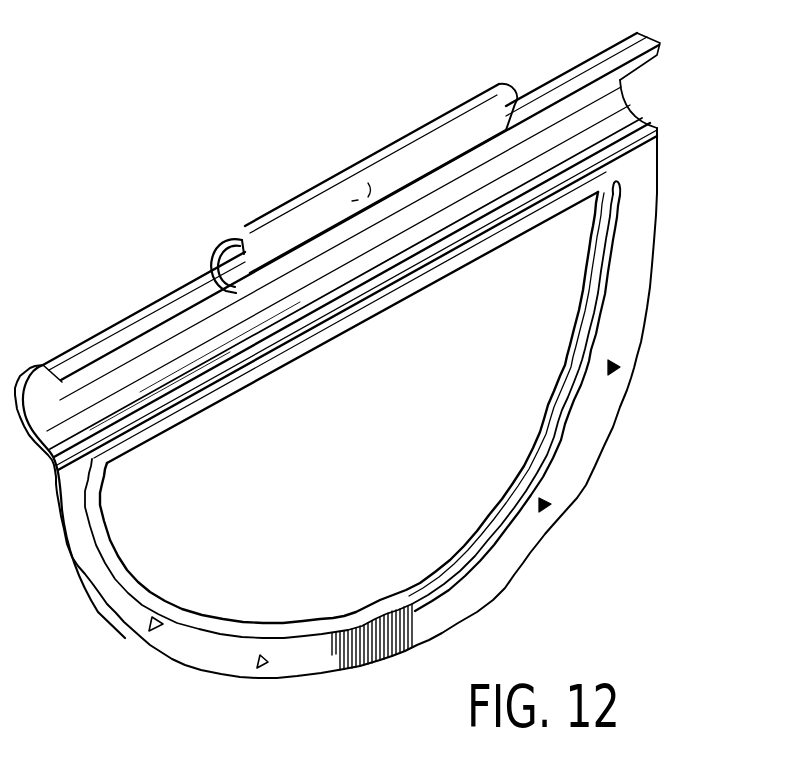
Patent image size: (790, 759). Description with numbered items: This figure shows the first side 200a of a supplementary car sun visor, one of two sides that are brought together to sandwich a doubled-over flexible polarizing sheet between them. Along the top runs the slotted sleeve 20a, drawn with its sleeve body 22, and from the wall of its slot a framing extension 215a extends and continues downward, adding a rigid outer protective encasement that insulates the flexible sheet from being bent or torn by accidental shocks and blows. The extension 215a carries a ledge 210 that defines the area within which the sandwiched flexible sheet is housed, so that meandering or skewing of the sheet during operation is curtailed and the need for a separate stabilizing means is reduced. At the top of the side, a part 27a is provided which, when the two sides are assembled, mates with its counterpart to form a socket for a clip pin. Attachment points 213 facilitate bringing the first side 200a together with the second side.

The first side 200a is at (238, 166).
The slotted sleeve 20a is at (110, 335).
The slotted sleeve body 22 is at (366, 178).
The part 27a is at (240, 240).
The ledge 210 is at (597, 310).
The framing extension 215a is at (622, 333).
The attachment point 213 is at (150, 632).